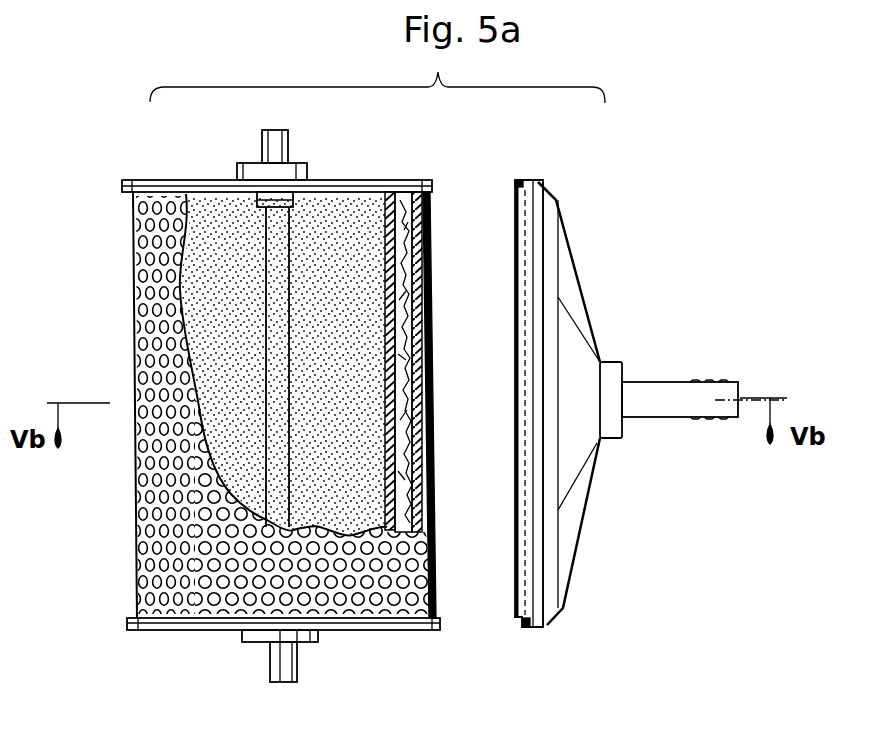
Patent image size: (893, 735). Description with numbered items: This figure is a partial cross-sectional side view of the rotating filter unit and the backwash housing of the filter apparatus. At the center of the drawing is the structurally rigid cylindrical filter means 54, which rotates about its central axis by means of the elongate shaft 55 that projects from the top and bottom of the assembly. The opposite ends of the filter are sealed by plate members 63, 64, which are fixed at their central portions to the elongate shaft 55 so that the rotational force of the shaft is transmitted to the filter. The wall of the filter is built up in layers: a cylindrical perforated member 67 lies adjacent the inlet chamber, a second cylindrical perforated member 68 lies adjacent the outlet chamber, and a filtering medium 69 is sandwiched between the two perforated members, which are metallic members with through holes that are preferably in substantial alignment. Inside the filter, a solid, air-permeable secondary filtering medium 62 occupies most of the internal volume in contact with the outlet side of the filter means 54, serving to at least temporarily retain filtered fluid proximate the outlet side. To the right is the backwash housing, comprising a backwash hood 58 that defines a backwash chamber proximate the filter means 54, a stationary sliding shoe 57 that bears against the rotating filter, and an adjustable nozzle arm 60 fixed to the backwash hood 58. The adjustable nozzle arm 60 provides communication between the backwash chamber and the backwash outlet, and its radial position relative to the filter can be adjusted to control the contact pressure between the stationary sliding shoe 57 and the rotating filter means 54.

The cylindrical filter means 54 is at (438, 357).
The elongate shaft 55 is at (298, 672).
The stationary sliding shoe 57 is at (526, 181).
The backwash hood 58 is at (598, 313).
The adjustable nozzle arm 60 is at (692, 382).
The secondary filtering medium 62 is at (326, 181).
The plate member 63 is at (183, 180).
The plate member 64 is at (164, 630).
The cylindrical perforated member 67 is at (424, 491).
The cylindrical perforated member 68 is at (424, 320).
The filtering medium 69 is at (424, 377).